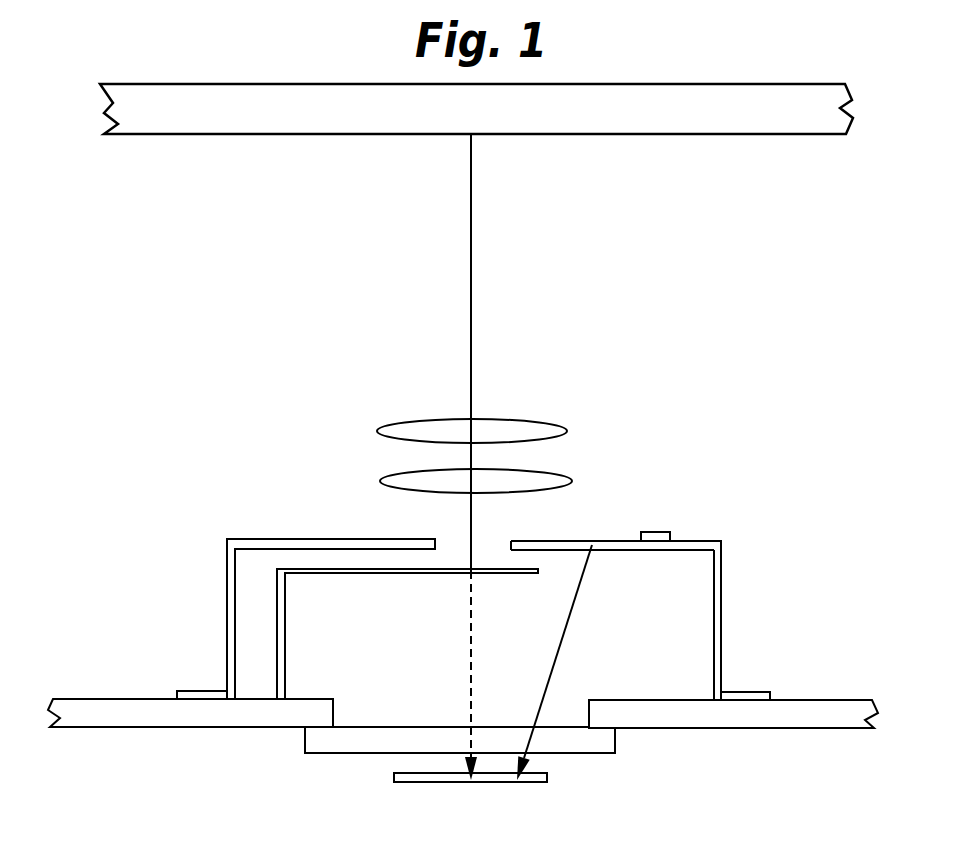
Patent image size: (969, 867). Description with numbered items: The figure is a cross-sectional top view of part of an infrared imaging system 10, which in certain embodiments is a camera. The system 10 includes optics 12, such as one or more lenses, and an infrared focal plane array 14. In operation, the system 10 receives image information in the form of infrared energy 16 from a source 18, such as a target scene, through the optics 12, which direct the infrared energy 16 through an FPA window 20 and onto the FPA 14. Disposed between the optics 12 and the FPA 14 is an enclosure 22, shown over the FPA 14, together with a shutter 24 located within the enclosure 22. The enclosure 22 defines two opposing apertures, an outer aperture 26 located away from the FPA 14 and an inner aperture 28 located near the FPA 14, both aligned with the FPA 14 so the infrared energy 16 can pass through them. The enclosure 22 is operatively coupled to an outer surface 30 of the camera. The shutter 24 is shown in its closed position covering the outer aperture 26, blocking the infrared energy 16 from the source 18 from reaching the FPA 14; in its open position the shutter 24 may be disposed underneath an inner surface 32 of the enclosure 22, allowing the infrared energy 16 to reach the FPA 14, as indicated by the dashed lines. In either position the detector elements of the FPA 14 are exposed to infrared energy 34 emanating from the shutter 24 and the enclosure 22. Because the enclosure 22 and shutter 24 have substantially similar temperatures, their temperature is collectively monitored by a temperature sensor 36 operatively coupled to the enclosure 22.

The infrared imaging system 10 is at (757, 403).
The optics 12 is at (366, 405).
The infrared focal plane array 14 is at (417, 782).
The infrared energy 16 is at (471, 307).
The source 18 is at (727, 134).
The FPA window 20 is at (610, 753).
The enclosure 22 is at (721, 581).
The shutter 24 is at (427, 573).
The outer aperture 26 is at (495, 543).
The inner aperture 28 is at (558, 712).
The outer surface 30 is at (128, 699).
The inner surface 32 is at (425, 549).
The infrared energy 34 is at (563, 627).
The temperature sensor 36 is at (659, 532).